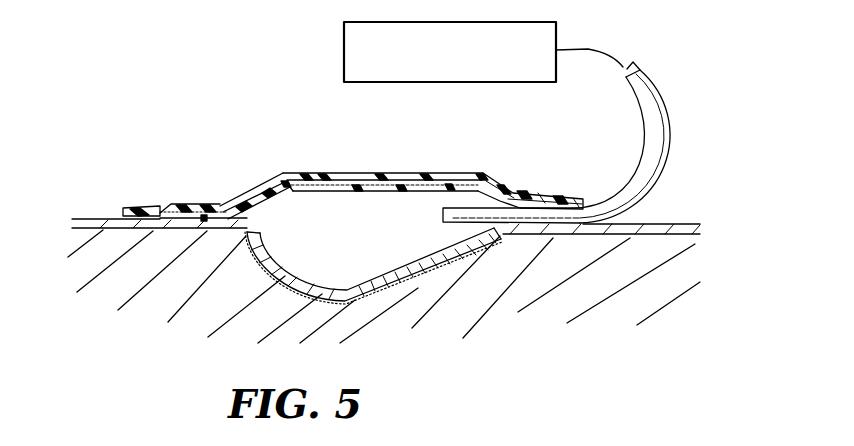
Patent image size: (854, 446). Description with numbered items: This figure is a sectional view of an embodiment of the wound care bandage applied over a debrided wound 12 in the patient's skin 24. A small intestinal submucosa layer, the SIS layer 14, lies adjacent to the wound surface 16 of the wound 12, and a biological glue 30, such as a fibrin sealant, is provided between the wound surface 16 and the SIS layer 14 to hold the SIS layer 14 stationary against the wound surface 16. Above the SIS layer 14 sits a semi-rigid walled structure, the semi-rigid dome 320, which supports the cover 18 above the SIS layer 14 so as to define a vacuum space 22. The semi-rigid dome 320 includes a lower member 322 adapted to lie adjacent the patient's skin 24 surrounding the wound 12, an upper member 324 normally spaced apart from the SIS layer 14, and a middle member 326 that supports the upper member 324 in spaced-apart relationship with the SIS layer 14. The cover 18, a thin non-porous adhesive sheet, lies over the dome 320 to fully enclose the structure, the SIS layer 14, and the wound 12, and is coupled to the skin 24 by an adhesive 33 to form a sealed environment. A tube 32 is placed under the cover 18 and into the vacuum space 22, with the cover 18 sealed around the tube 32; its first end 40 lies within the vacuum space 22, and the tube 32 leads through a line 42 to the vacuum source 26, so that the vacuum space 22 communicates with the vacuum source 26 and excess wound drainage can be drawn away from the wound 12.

The debrided wound 12 is at (497, 254).
The small intestinal submucosa (SIS) layer 14 is at (306, 279).
The wound surface 16 is at (328, 290).
The cover 18 is at (509, 186).
The vacuum space 22 is at (396, 220).
The patient's skin 24 is at (110, 226).
The vacuum source 26 is at (344, 60).
The biological glue 30 is at (268, 272).
The tube 32 is at (659, 122).
The adhesive 33 is at (215, 211).
The first end of tube 40 is at (455, 216).
The vacuum line 42 is at (578, 52).
The semi-rigid dome 320 is at (273, 179).
The lower member 322 is at (191, 219).
The upper member 324 is at (341, 184).
The middle member 326 is at (266, 199).